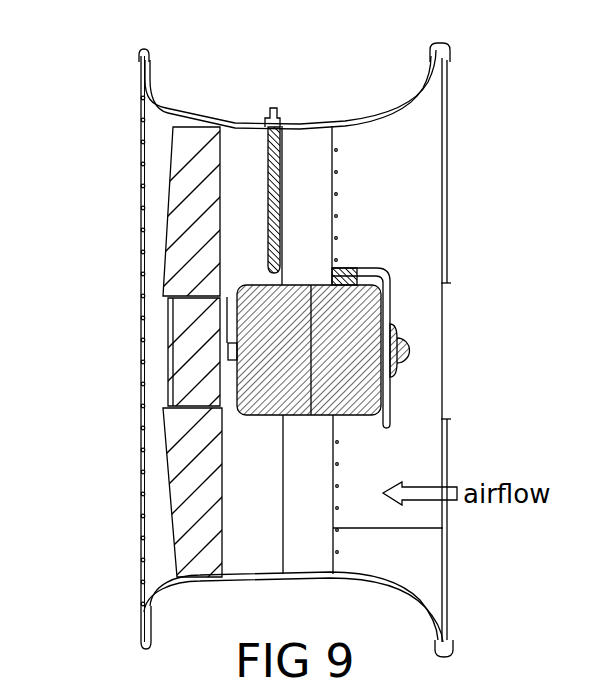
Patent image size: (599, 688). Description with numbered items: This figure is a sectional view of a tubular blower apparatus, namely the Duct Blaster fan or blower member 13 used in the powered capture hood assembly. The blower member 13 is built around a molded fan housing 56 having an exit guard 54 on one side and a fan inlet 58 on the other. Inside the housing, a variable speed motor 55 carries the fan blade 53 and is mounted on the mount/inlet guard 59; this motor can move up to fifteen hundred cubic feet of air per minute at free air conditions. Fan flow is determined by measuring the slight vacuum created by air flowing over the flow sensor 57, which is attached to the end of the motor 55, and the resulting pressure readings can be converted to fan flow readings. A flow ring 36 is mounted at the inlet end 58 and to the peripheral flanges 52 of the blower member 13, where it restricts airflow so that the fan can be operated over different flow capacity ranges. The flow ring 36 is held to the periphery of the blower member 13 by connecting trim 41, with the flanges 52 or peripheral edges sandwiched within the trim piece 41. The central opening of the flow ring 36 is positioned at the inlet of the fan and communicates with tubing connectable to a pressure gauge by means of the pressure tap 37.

The blower member 13 is at (456, 128).
The flow ring 36 is at (448, 588).
The pressure tap 37 is at (278, 108).
The connecting trim 41 is at (453, 647).
The peripheral flanges 52 is at (146, 62).
The fan blade 53 is at (172, 168).
The exit guard 54 is at (141, 307).
The variable speed motor 55 is at (355, 421).
The fan housing 56 is at (395, 120).
The flow sensor 57 is at (390, 284).
The fan inlet 58 is at (443, 303).
The mount/inlet guard 59 is at (408, 532).